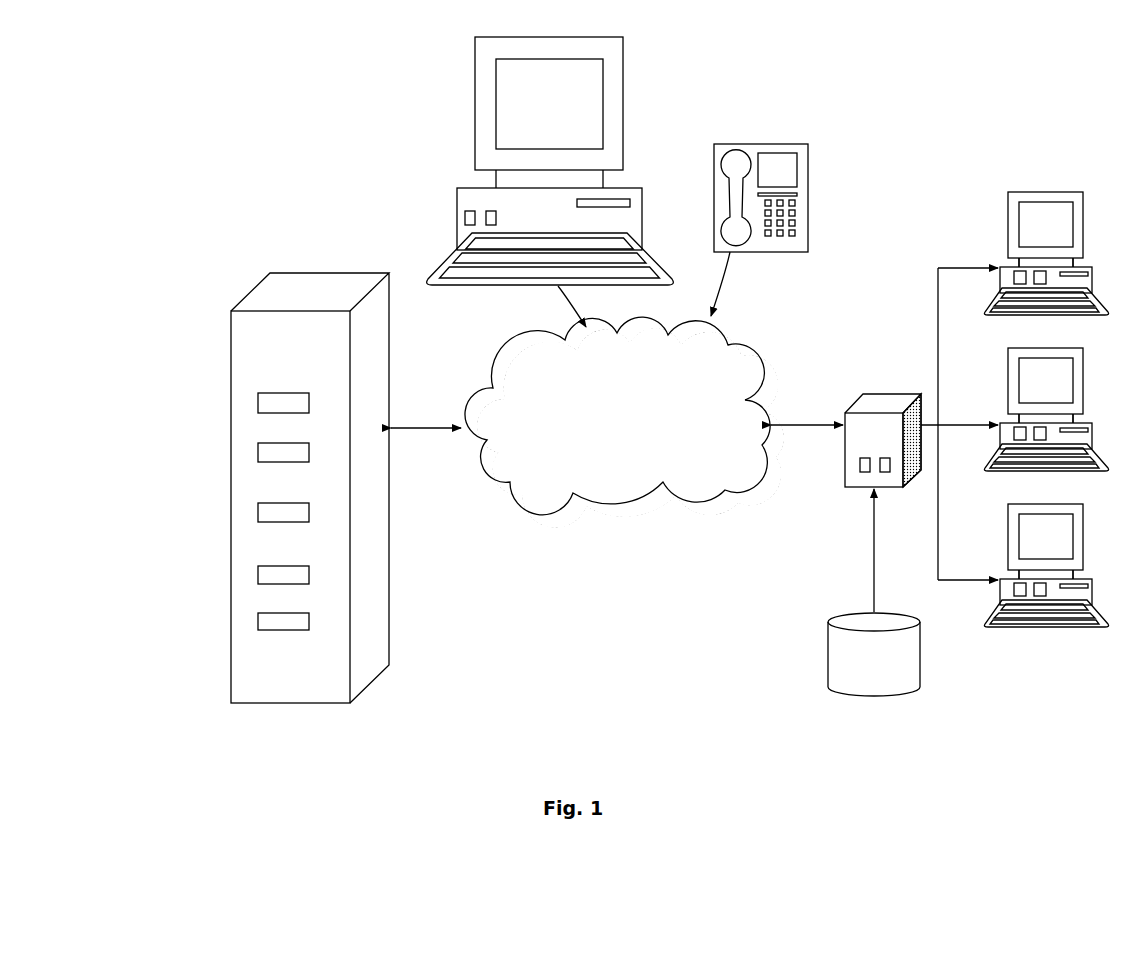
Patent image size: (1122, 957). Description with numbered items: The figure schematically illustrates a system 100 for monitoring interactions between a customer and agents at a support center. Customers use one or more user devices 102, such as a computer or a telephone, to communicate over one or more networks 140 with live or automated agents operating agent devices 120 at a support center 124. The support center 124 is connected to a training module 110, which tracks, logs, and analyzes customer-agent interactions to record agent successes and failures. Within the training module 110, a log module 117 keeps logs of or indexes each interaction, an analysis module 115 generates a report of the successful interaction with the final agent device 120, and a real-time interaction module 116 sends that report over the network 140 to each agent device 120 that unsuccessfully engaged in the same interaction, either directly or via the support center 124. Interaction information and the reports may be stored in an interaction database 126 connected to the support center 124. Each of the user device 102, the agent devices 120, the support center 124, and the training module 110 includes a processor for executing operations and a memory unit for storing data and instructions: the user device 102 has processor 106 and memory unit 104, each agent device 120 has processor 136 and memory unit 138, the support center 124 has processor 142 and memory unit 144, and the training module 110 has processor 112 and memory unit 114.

The system 100 is at (176, 161).
The user device 102 is at (596, 182).
The memory unit 104 is at (462, 215).
The processor 106 is at (489, 205).
The training module 110 is at (286, 488).
The processor 112 is at (260, 403).
The memory unit 114 is at (260, 453).
The analysis module 115 is at (260, 513).
The real-time interaction module 116 is at (260, 575).
The log module 117 is at (260, 622).
The agent device 120 is at (1023, 409).
The support center 124 is at (893, 449).
The interaction database 126 is at (892, 664).
The processor 136 is at (1013, 274).
The memory unit 138 is at (1036, 576).
The network 140 is at (644, 432).
The processor 142 is at (839, 481).
The memory unit 144 is at (912, 471).